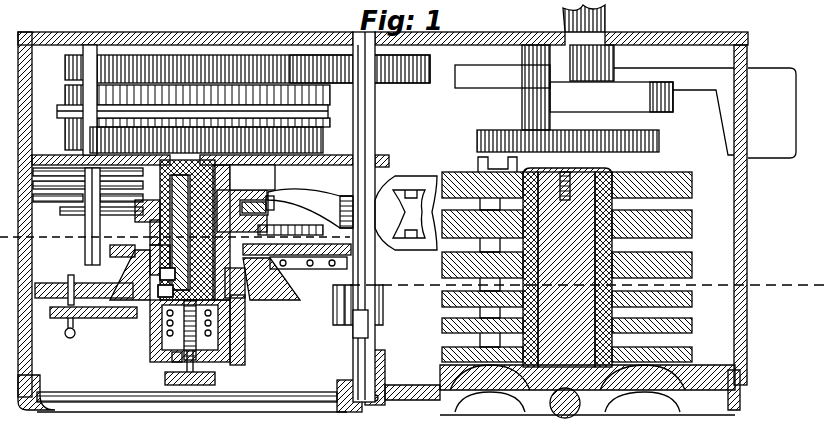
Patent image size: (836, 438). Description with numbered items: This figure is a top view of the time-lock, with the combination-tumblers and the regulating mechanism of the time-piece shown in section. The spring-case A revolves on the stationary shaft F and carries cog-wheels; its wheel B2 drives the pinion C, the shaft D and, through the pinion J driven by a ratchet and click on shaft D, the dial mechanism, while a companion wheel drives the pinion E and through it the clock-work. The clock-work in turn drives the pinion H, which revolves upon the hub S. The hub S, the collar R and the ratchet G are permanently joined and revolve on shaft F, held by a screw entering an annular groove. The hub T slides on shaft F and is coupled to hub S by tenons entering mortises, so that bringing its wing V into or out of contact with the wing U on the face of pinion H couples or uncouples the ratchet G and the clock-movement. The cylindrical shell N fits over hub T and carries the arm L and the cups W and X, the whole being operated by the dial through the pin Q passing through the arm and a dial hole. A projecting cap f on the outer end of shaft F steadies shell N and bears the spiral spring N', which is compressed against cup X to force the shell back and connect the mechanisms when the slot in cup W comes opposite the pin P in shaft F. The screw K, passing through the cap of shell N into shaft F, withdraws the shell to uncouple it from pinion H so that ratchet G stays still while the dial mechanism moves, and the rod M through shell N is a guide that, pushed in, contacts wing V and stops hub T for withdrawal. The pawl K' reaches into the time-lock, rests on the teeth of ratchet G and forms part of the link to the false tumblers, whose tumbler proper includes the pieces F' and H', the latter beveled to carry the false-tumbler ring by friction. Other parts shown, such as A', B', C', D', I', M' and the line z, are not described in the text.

The spring-case A is at (193, 100).
The cog-wheel B2 is at (247, 69).
The pinion C is at (366, 69).
The shaft D is at (363, 217).
The pinion E is at (184, 140).
The gear A' is at (586, 43).
The arm B' is at (642, 118).
The gear wheel C' is at (568, 141).
The bracket D' is at (625, 101).
The tumbler piece F' is at (567, 177).
The tumbler piece H' is at (567, 280).
The central column I' is at (567, 267).
The pinion J is at (425, 239).
The hub S is at (100, 216).
The stationary shaft F is at (182, 230).
The hub T is at (191, 232).
The ratchet G is at (327, 213).
The collar R is at (252, 177).
The pinion H is at (262, 208).
The wing U is at (285, 231).
The wing V is at (175, 246).
The pawl K' is at (310, 205).
The pin P is at (295, 291).
The wedge I is at (92, 272).
The pin Q is at (66, 286).
The arm L is at (93, 322).
The cylindrical shell N is at (180, 331).
The screw K is at (181, 367).
The spiral spring N' is at (238, 336).
The rod M is at (238, 303).
The bearing M' is at (349, 324).
The cup W is at (167, 274).
The cup X is at (165, 291).
The cap f is at (177, 357).
The axis line z is at (590, 285).